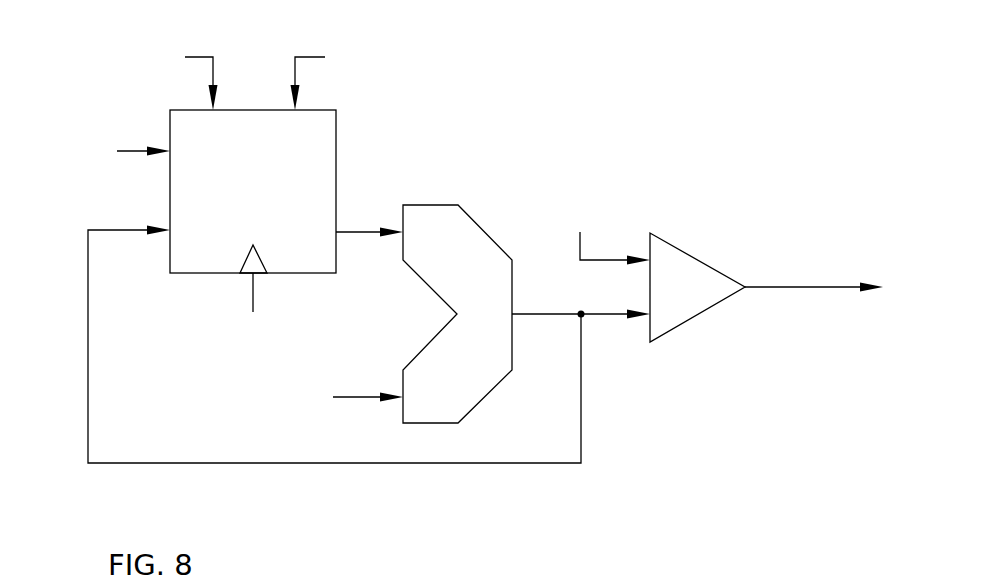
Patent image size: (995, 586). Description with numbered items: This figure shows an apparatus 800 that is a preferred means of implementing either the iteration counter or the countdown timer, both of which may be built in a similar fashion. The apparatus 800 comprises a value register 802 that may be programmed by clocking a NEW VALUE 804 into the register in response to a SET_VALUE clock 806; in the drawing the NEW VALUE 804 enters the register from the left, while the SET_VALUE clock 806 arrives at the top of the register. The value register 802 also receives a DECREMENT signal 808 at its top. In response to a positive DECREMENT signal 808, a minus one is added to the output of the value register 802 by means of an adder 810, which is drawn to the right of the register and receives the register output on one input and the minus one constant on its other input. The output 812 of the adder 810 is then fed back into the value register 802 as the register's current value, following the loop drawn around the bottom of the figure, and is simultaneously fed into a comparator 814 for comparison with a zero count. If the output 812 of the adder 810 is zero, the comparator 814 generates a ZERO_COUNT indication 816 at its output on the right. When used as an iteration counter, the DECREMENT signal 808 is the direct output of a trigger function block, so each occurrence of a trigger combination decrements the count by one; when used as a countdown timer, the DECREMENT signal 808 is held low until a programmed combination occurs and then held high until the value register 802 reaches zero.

The apparatus 800 is at (612, 123).
The value register 802 is at (336, 177).
The NEW VALUE 804 is at (130, 147).
The SET_VALUE clock 806 is at (213, 70).
The DECREMENT signal 808 is at (295, 70).
The adder 810 is at (477, 403).
The output of the adder 812 is at (540, 465).
The comparator 814 is at (678, 323).
The ZERO_COUNT indication 816 is at (787, 288).